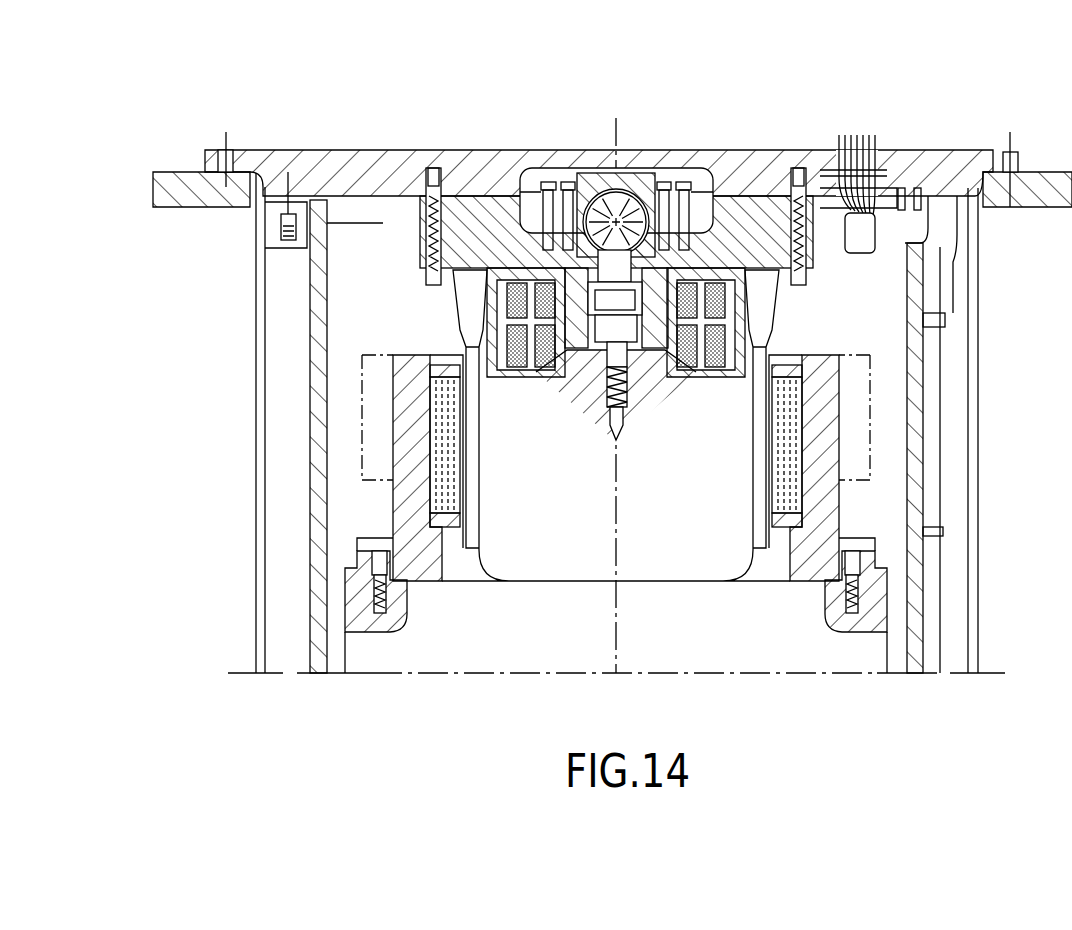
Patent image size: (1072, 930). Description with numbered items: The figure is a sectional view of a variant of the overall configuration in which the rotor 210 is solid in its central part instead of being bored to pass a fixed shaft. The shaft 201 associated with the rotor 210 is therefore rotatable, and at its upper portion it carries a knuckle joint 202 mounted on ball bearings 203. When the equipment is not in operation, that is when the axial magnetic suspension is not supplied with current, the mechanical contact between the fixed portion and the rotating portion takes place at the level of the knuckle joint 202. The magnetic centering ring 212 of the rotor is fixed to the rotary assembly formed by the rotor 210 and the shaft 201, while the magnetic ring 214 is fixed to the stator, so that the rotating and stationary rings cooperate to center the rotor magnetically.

The shaft 201 is at (674, 280).
The knuckle joint 202 is at (621, 200).
The ball bearings 203 is at (637, 375).
The rotor 210 is at (692, 637).
The magnetic centering ring 212 is at (712, 382).
The magnetic ring 214 is at (722, 311).